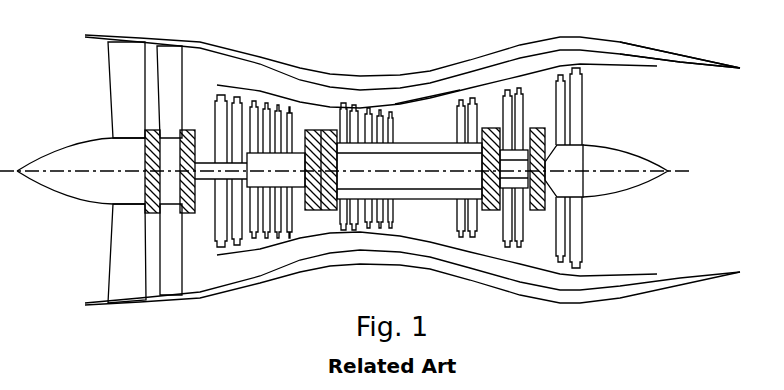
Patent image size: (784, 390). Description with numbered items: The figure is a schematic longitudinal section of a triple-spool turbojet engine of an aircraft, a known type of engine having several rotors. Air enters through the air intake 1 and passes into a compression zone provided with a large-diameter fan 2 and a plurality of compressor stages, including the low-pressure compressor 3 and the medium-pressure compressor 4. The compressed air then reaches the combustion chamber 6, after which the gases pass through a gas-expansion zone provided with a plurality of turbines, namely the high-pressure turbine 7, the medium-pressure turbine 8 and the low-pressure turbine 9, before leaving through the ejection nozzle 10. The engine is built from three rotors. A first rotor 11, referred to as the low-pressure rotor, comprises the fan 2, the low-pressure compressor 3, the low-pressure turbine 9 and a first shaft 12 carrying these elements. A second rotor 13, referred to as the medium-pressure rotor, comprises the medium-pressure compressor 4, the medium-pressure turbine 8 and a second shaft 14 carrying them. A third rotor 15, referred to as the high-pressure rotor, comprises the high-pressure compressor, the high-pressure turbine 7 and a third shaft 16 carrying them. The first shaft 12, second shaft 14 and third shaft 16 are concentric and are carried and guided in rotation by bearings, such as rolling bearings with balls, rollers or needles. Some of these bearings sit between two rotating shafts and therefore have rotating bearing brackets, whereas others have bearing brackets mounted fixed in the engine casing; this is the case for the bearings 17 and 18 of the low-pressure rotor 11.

The air intake 1 is at (81, 95).
The fan 2 is at (122, 52).
The low-pressure compressor 3 is at (233, 85).
The medium-pressure compressor 4 is at (273, 102).
The combustion chamber 6 is at (431, 117).
The high-pressure turbine 7 is at (463, 103).
The medium-pressure turbine 8 is at (510, 90).
The low-pressure turbine 9 is at (578, 85).
The ejection nozzle 10 is at (686, 100).
The first rotor 11 is at (188, 220).
The first shaft 12 is at (204, 163).
The second rotor 13 is at (278, 190).
The second shaft 14 is at (347, 184).
The third rotor 15 is at (365, 108).
The third shaft 16 is at (447, 195).
The bearing 17 is at (146, 192).
The bearing 18 is at (547, 132).